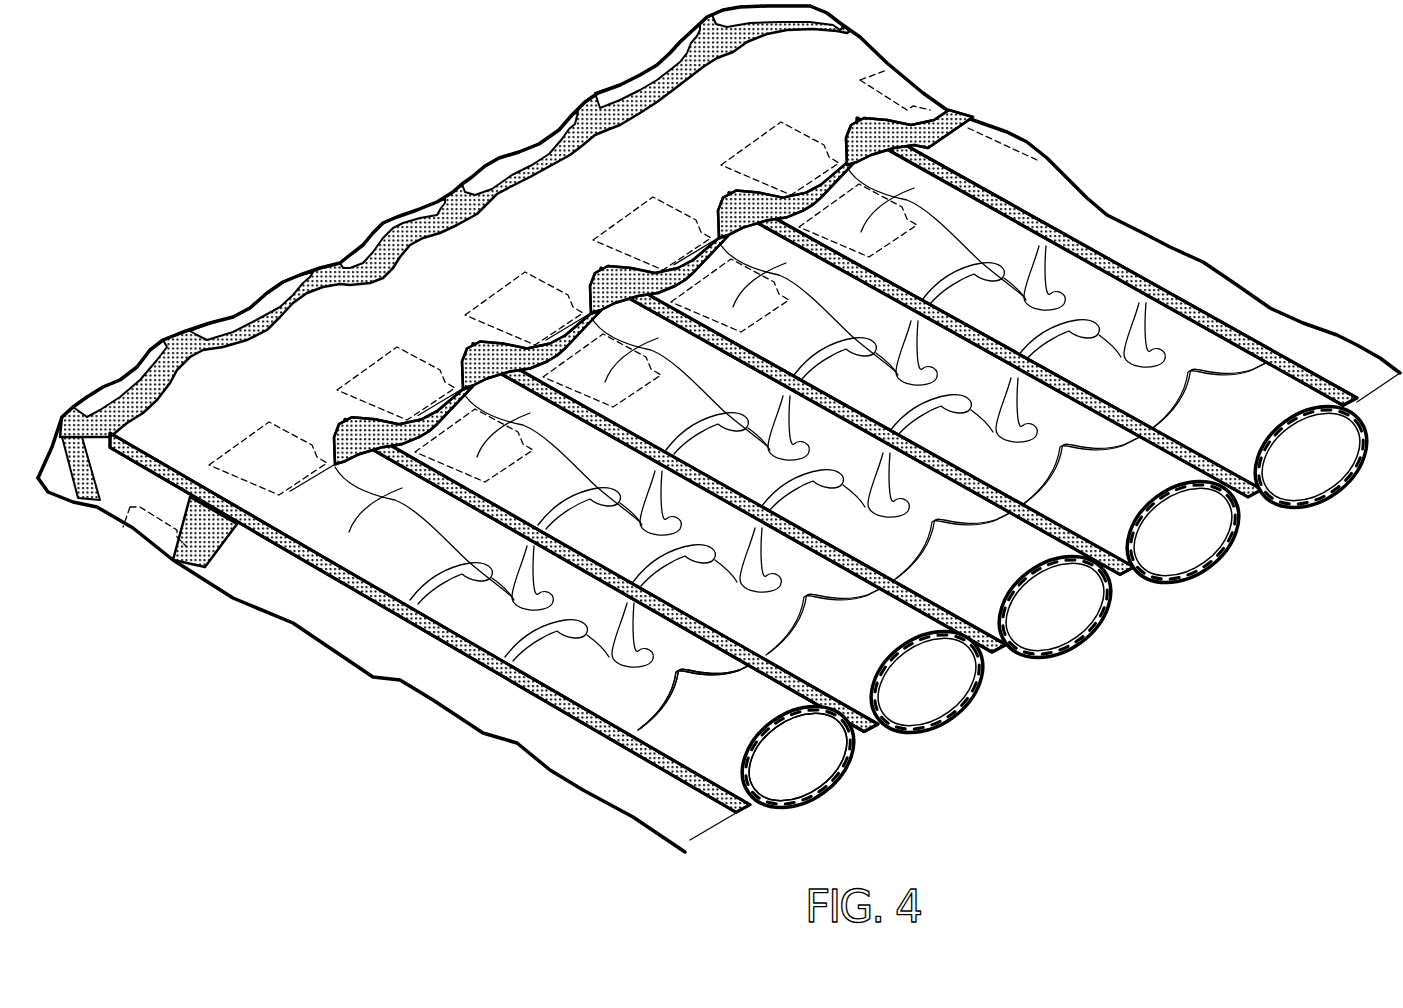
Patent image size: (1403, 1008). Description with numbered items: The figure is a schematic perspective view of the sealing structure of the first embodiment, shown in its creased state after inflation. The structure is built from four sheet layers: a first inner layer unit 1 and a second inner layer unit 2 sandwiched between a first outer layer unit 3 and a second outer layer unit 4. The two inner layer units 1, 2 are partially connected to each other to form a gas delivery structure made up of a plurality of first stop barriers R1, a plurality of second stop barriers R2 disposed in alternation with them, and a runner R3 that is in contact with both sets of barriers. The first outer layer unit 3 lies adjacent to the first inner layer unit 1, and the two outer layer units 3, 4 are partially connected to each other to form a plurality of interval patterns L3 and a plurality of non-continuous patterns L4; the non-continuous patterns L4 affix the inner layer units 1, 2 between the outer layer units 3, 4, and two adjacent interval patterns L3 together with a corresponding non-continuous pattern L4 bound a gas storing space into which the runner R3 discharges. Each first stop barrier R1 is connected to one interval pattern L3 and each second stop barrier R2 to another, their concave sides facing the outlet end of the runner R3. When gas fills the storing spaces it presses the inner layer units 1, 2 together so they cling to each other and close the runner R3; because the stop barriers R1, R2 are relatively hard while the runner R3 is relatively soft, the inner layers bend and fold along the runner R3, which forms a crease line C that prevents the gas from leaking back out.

The first inner layer unit 1 is at (657, 710).
The second inner layer unit 2 is at (670, 723).
The first outer layer unit 3 is at (757, 734).
The second outer layer unit 4 is at (826, 790).
The crease line C is at (318, 602).
The first stop barrier R1 is at (497, 663).
The second stop barrier R2 is at (603, 657).
The runner R3 is at (233, 450).
The interval pattern L3 is at (817, 683).
The non-continuous pattern L4 is at (460, 362).